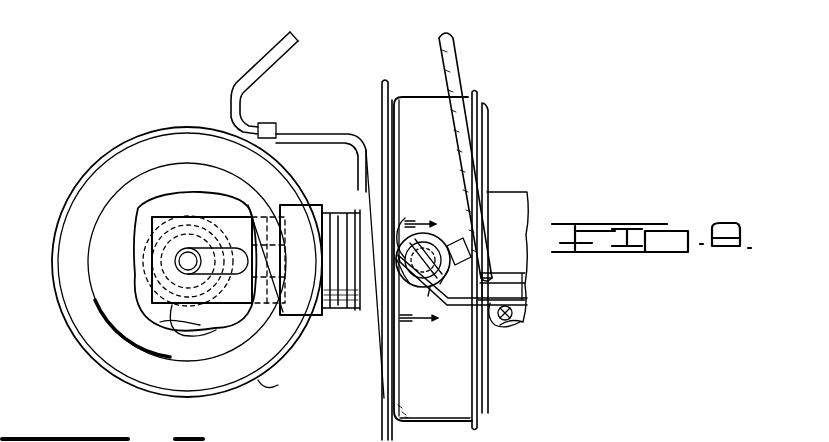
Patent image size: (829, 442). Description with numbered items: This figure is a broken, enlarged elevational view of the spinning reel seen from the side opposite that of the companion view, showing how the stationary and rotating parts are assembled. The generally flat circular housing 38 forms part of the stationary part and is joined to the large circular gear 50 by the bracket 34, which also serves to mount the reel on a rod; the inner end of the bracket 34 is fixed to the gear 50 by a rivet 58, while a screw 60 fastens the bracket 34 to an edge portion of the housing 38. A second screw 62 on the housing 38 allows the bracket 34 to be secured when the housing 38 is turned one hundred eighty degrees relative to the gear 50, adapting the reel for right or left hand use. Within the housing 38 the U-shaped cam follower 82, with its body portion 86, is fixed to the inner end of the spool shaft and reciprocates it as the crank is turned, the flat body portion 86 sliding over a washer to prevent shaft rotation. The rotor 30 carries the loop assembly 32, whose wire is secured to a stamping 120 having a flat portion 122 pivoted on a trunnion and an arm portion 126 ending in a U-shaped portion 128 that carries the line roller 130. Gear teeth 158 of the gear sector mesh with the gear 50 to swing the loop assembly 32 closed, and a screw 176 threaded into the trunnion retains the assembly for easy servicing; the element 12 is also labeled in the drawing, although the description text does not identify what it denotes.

The pawl lever 12 is at (409, 214).
The rotor 30 is at (412, 92).
The loop assembly 32 is at (462, 52).
The bracket 34 is at (288, 58).
The housing 38 is at (100, 369).
The large circular gear 50 is at (365, 353).
The rivet 58 is at (352, 158).
The screw 60 is at (274, 128).
The second screw 62 is at (265, 390).
The cam follower 82 is at (173, 209).
The body portion 86 is at (185, 330).
The stamping 120 is at (454, 315).
The flat portion 122 is at (432, 247).
The arm portion 126 is at (436, 321).
The U-shaped portion 128 is at (512, 330).
The roller 130 is at (515, 299).
The gear teeth 158 is at (433, 300).
The screw 176 is at (445, 203).